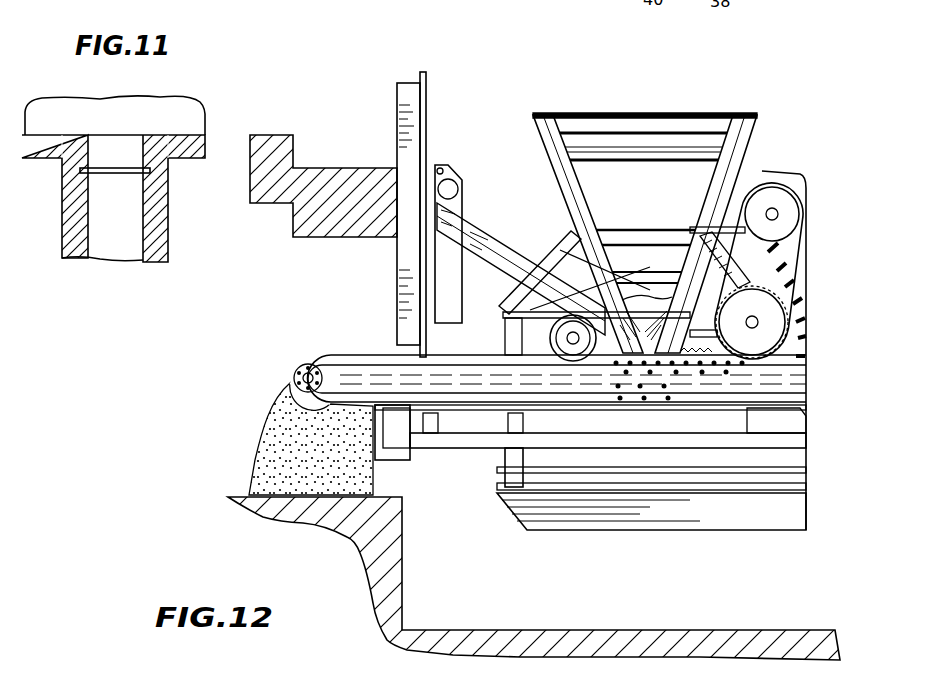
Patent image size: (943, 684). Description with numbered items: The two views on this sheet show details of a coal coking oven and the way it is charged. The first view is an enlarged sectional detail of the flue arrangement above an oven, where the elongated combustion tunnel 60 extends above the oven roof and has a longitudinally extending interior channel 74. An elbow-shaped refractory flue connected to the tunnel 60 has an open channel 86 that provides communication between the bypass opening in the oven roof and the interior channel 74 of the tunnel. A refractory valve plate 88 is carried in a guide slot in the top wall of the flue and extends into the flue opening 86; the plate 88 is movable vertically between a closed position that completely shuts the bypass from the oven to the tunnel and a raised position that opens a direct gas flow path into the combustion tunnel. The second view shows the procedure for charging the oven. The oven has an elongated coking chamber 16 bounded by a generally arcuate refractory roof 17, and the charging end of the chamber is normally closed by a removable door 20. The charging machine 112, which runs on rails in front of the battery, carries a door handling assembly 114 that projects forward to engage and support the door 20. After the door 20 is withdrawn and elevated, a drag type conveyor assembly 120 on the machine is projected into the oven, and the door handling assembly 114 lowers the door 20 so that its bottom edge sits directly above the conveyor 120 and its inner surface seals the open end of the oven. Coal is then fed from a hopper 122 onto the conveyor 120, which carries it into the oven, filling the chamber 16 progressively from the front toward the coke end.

In FIG. 11, the interior channel 74 is at (181, 108).
In FIG. 11, the combustion tunnel 60 is at (196, 158).
In FIG. 11, the open channel 86 is at (130, 234).
In FIG. 11, the refractory valve plate 88 is at (125, 174).
In FIG. 12, the coking chamber 16 is at (327, 313).
In FIG. 12, the arcuate roof 17 is at (293, 136).
In FIG. 12, the door 20 is at (426, 122).
In FIG. 12, the door handling assembly 114 is at (475, 225).
In FIG. 12, the drag type conveyor assembly 120 is at (382, 350).
In FIG. 12, the hopper 122 is at (652, 125).
In FIG. 12, the charging machine 112 is at (751, 168).